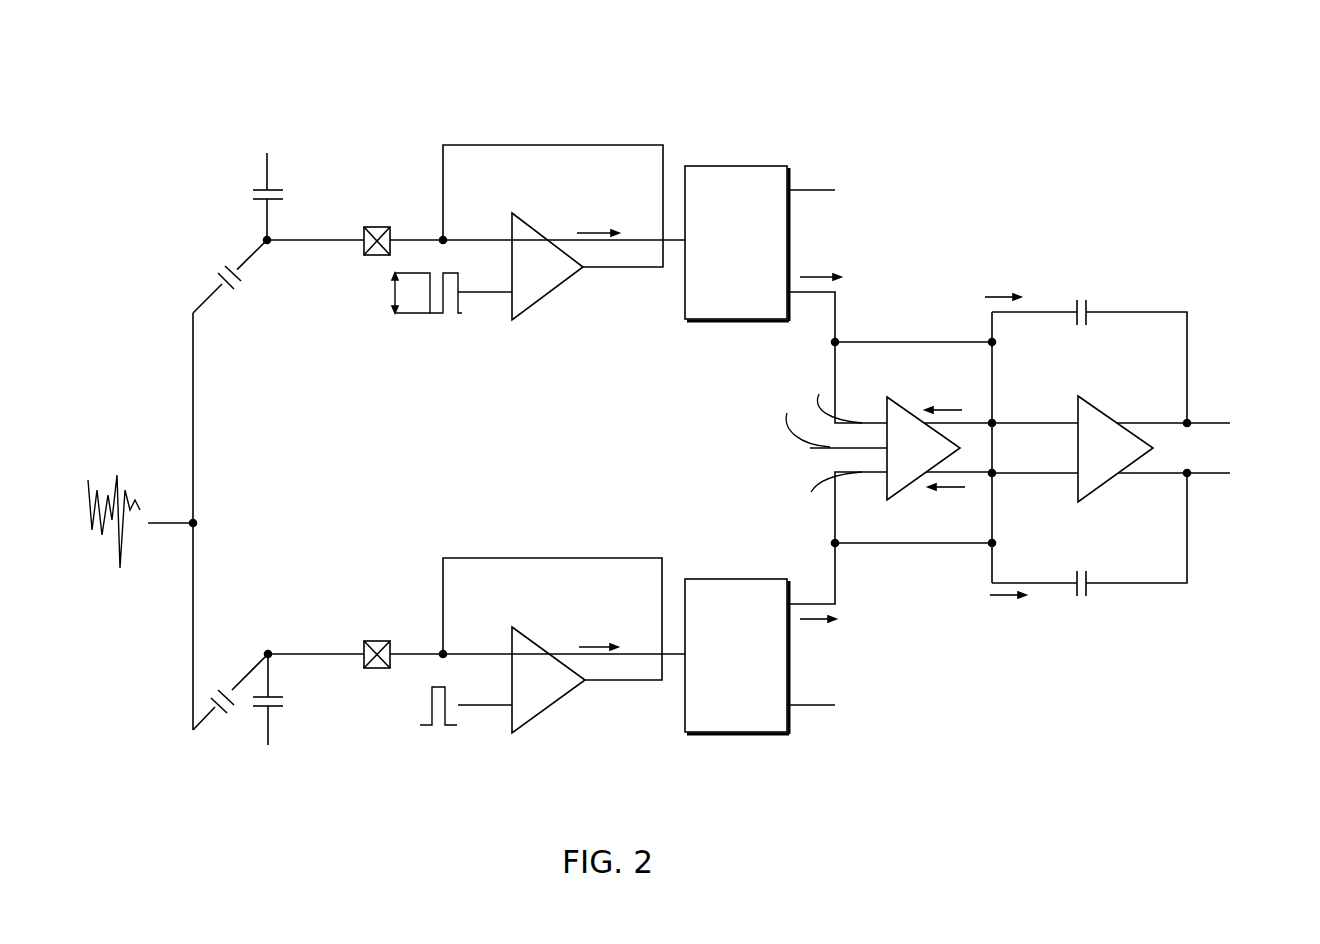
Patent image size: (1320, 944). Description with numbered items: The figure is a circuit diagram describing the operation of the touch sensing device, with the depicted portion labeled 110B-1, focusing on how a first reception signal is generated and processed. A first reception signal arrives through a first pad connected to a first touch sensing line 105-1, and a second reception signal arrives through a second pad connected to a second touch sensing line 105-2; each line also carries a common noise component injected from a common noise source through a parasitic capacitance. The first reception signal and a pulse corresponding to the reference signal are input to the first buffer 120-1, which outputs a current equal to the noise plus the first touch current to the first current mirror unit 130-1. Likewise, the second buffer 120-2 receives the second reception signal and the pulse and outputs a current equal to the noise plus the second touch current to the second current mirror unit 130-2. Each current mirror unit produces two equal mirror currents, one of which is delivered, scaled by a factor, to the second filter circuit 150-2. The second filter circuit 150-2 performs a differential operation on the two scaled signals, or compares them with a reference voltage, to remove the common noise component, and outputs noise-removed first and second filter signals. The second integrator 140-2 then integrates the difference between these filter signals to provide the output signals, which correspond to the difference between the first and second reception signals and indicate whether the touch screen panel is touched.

The receiver circuit 110B-1 is at (926, 97).
The first touch sensing line 105-1 is at (332, 263).
The second touch sensing line 105-2 is at (372, 700).
The first buffer 120-1 is at (548, 293).
The second buffer 120-2 is at (548, 708).
The first current mirror unit 130-1 is at (757, 166).
The second current mirror unit 130-2 is at (757, 579).
The second filter circuit 150-2 is at (900, 405).
The second integrator 140-2 is at (1105, 410).